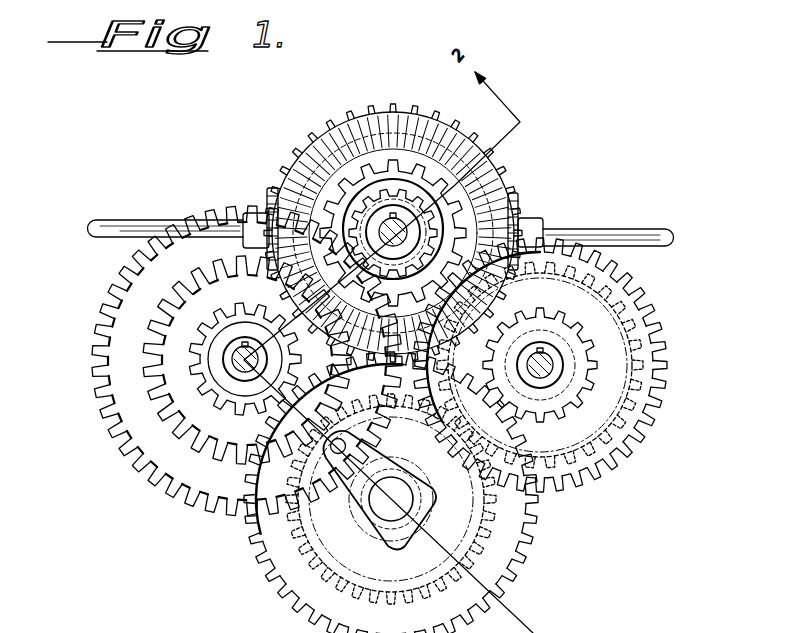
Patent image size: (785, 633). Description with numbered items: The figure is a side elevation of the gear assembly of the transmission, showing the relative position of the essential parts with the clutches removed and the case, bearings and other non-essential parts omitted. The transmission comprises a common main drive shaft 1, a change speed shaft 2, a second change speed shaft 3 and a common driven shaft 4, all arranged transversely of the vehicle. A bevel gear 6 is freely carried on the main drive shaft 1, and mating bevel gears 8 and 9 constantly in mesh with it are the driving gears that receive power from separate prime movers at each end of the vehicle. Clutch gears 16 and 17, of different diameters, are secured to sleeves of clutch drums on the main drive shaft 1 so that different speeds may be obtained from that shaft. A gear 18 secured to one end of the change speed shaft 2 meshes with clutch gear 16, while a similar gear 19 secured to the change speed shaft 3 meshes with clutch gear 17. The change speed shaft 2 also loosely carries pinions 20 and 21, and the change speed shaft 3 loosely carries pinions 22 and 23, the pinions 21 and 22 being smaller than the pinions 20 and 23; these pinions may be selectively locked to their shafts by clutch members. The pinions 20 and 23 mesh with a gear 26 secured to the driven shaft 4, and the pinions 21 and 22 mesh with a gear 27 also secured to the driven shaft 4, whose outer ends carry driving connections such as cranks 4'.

The main drive shaft 1 is at (442, 199).
The change speed shaft 2 is at (234, 365).
The second change speed shaft 3 is at (563, 360).
The driven shaft 4 is at (381, 502).
The cranks 4' is at (391, 490).
The bevel gear 6 is at (453, 132).
The mating bevel gear 8 is at (514, 203).
The mating bevel gear 9 is at (273, 198).
The clutch gear 16 is at (406, 114).
The clutch gear 17 is at (357, 164).
The gear 18 is at (108, 293).
The gear 19 is at (653, 297).
The pinion 20 is at (154, 396).
The pinion 21 is at (243, 319).
The pinion 22 is at (540, 373).
The pinion 23 is at (629, 438).
The gear 26 is at (290, 595).
The gear 27 is at (523, 541).